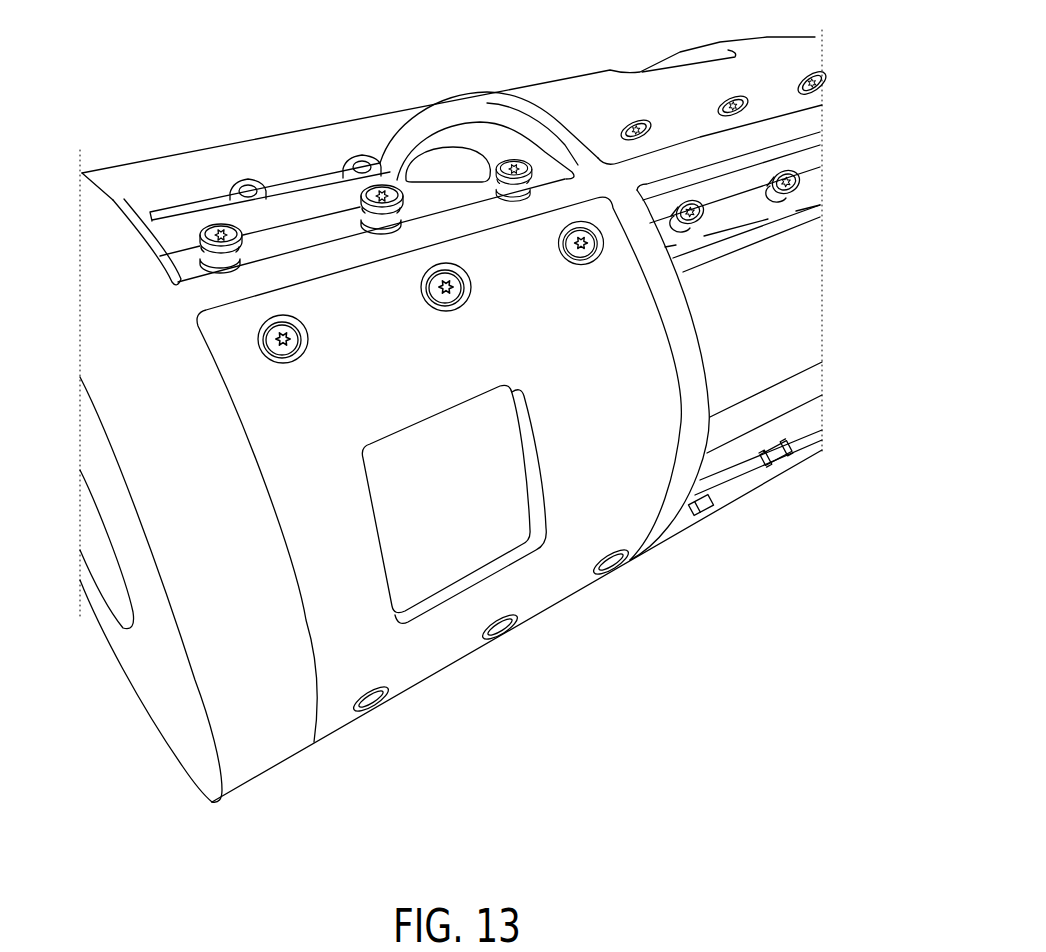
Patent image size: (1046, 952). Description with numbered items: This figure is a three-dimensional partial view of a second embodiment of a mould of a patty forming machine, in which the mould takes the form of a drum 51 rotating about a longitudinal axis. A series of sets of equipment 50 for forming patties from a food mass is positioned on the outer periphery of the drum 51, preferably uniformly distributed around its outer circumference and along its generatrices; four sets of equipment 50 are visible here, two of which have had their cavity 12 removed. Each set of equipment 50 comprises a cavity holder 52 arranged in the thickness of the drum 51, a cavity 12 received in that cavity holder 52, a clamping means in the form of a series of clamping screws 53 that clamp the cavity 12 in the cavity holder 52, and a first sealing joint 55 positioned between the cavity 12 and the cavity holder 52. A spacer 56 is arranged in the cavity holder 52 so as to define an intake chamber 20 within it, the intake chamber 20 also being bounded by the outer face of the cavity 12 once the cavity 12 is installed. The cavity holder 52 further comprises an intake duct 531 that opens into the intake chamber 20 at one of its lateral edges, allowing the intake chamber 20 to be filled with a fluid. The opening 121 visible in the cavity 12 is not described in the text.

The cavity 12 is at (577, 540).
The window opening 121 is at (453, 553).
The intake chamber 20 is at (793, 271).
The equipment 50 is at (600, 115).
The drum 51 is at (250, 742).
The cavity holder 52 is at (432, 132).
The clamping screws 53 is at (347, 180).
The intake duct 531 is at (448, 165).
The first sealing joint 55 is at (157, 262).
The spacer 56 is at (735, 450).